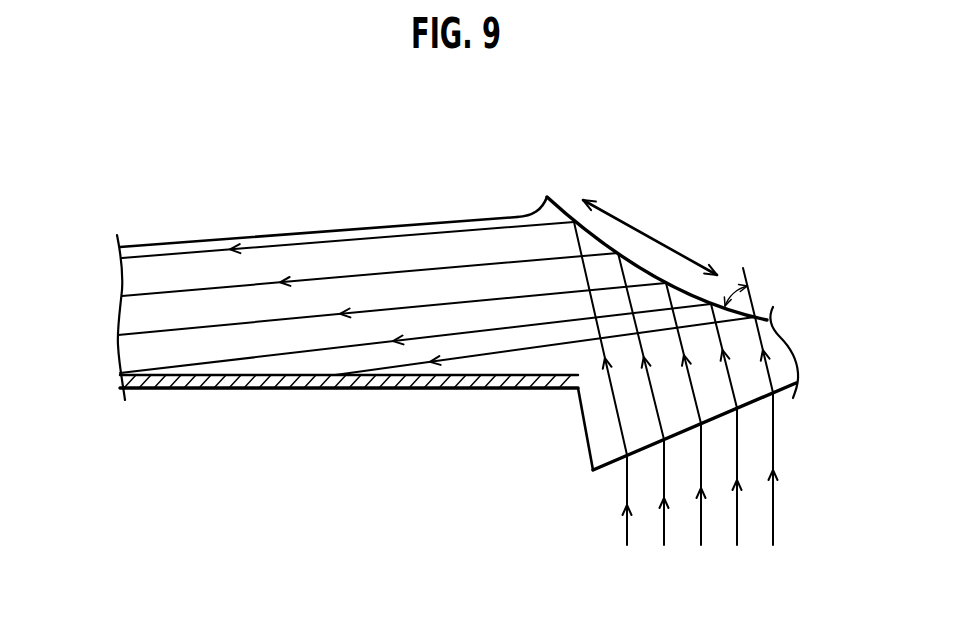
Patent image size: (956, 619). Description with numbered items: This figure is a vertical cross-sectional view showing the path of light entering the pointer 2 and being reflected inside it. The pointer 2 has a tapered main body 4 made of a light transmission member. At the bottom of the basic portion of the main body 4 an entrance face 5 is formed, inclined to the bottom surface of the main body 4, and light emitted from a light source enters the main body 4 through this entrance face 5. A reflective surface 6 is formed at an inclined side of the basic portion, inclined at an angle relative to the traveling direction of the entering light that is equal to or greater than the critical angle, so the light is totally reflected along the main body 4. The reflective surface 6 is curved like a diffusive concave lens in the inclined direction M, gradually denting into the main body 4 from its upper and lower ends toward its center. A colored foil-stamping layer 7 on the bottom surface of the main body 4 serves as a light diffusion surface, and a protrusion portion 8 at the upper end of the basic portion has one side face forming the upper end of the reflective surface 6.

The pointer 2 is at (420, 193).
The main body 4 is at (287, 253).
The entrance face 5 is at (753, 402).
The reflective surface 6 is at (645, 262).
The foil-stamping layer 7 is at (303, 390).
The protrusion portion 8 is at (548, 197).
The inclined direction M is at (643, 262).